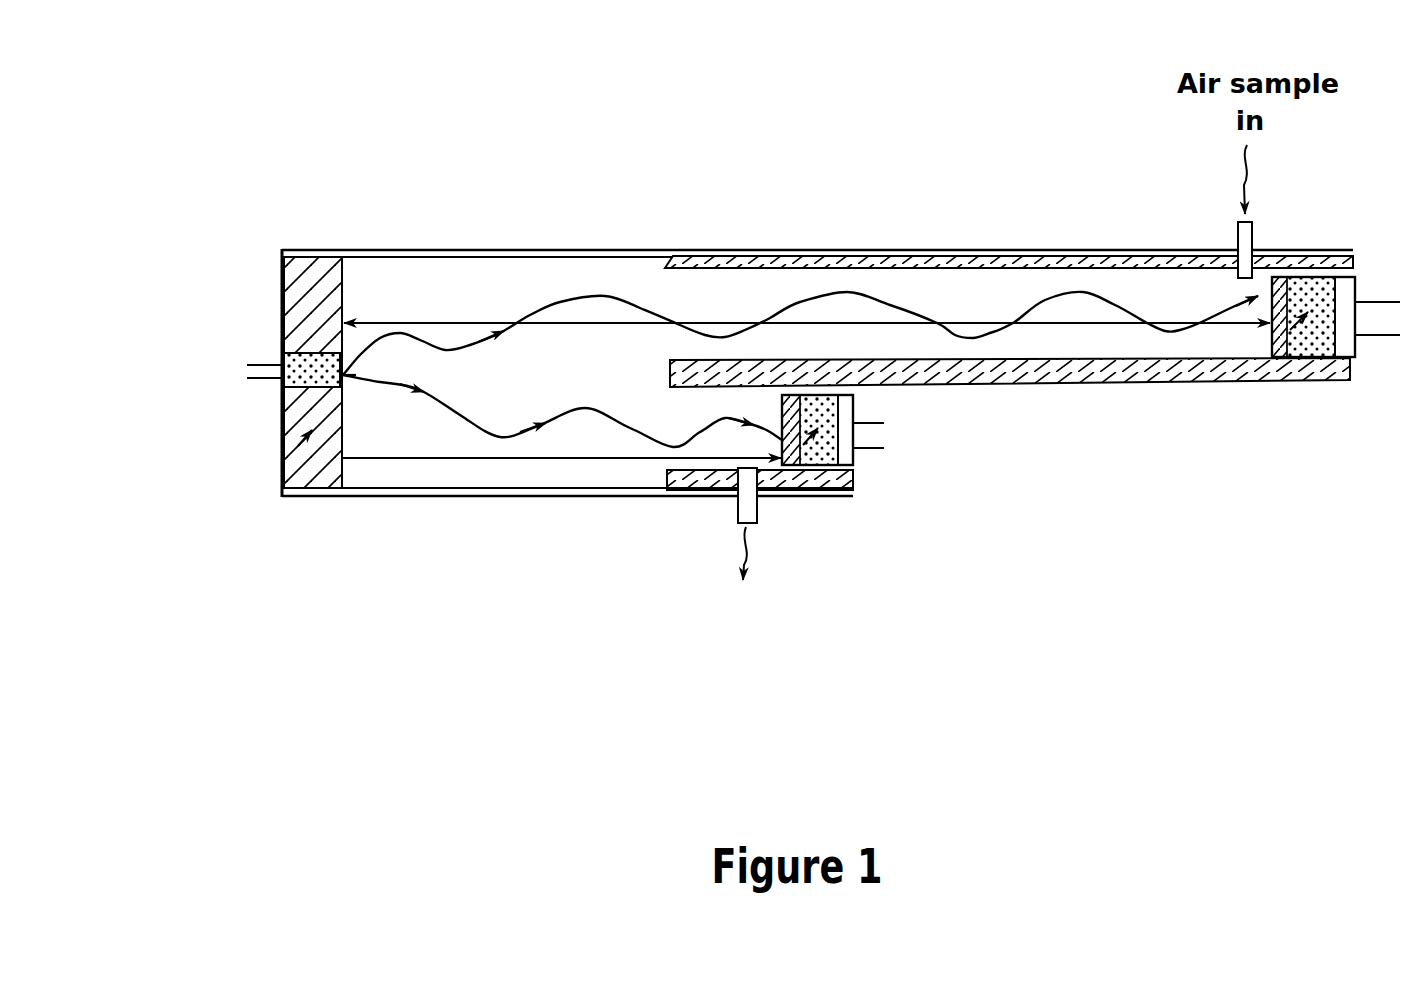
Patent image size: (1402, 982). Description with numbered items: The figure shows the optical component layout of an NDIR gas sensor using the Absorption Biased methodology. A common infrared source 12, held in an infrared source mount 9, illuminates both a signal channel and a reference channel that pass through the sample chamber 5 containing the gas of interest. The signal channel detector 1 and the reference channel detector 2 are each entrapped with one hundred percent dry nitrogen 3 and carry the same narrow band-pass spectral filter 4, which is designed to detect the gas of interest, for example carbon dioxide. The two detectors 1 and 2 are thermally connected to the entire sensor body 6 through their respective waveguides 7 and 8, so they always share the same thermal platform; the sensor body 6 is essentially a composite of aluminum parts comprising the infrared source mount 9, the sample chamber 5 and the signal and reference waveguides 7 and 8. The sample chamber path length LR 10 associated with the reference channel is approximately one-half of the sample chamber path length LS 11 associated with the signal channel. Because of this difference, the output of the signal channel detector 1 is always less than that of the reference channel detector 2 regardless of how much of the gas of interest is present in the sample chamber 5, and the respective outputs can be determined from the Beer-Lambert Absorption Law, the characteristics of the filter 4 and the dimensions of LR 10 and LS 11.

The signal channel detector 1 is at (1303, 279).
The reference channel detector 2 is at (818, 467).
The dry nitrogen 3 is at (1126, 455).
The narrow band-pass spectral filter 4 is at (1272, 300).
The sample chamber 5 is at (567, 388).
The sensor body 6 is at (522, 496).
The signal channel waveguide 7 is at (1065, 262).
The reference channel waveguide 8 is at (724, 489).
The infrared source mount 9 is at (280, 488).
The reference channel path length LR 10 is at (448, 461).
The signal channel path length LS 11 is at (445, 321).
The infrared source 12 is at (281, 387).